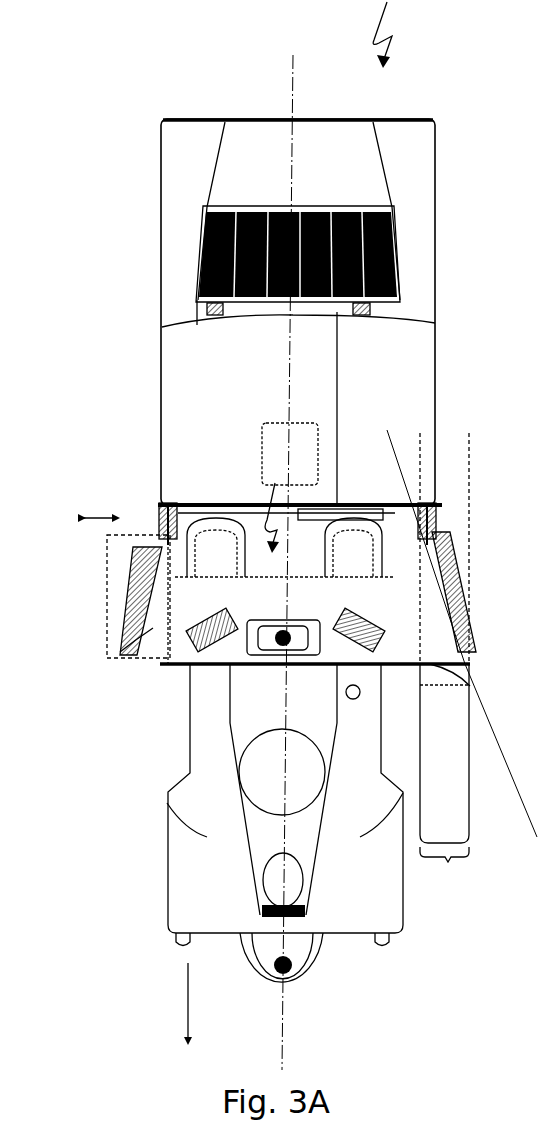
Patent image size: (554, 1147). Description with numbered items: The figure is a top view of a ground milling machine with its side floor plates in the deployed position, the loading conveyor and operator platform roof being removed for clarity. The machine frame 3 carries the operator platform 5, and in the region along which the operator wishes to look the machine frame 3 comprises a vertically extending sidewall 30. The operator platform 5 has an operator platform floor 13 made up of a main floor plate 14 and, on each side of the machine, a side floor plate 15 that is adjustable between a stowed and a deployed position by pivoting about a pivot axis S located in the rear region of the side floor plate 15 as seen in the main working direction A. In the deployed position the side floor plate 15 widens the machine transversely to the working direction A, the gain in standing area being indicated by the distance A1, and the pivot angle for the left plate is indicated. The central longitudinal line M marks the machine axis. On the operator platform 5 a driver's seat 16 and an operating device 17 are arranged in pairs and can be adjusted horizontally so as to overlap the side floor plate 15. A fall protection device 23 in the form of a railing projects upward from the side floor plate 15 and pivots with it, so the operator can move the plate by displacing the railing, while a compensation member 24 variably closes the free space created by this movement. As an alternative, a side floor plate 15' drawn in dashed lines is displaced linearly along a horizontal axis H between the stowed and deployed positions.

The machine frame 3 is at (197, 118).
The sidewall 30 is at (173, 212).
The operator platform 5 is at (272, 508).
The operator platform floor 13 is at (272, 607).
The main floor plate 14 is at (203, 598).
The side floor plate 15 is at (301, 603).
The side floor plate (linearly displaceable variant) 15' is at (101, 596).
The driver's seat 16 is at (200, 566).
The operating device 17 is at (165, 670).
The fall protection device 23 is at (440, 603).
The compensation member 24 is at (462, 633).
The longitudinal center axis M is at (290, 553).
The pivot axis S is at (158, 508).
The horizontal axis H is at (101, 506).
The working direction A is at (187, 1020).
The distance A1 is at (444, 776).